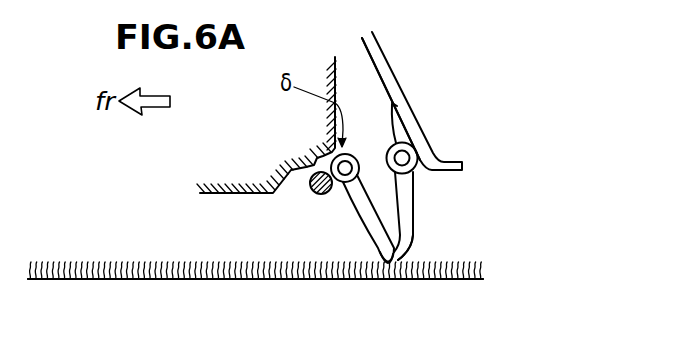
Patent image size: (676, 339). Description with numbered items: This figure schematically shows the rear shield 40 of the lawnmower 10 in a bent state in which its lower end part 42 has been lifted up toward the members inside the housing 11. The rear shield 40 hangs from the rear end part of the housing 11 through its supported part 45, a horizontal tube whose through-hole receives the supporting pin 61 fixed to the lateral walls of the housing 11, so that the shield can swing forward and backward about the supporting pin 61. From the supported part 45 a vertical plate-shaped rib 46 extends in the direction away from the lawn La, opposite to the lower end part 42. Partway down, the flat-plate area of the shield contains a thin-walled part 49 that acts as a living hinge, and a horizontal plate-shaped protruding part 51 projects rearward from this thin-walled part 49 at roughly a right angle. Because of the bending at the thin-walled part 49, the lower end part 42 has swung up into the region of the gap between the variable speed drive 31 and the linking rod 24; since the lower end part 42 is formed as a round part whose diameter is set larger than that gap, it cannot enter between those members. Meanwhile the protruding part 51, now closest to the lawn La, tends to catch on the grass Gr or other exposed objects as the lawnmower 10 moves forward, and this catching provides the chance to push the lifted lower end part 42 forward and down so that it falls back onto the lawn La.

The lawnmower 10 is at (541, 72).
The housing 11 is at (382, 59).
The linking rod 24 is at (313, 191).
The variable speed drive 31 is at (229, 174).
The rear shield 40 is at (420, 187).
The lower end part 42 is at (349, 154).
The supported part 45 is at (418, 141).
The rib 46 is at (397, 105).
The thin-walled part 49 is at (393, 254).
The protruding part 51 is at (386, 261).
The supporting pin 61 is at (410, 158).
The grass Gr is at (428, 262).
The lawn La is at (482, 277).